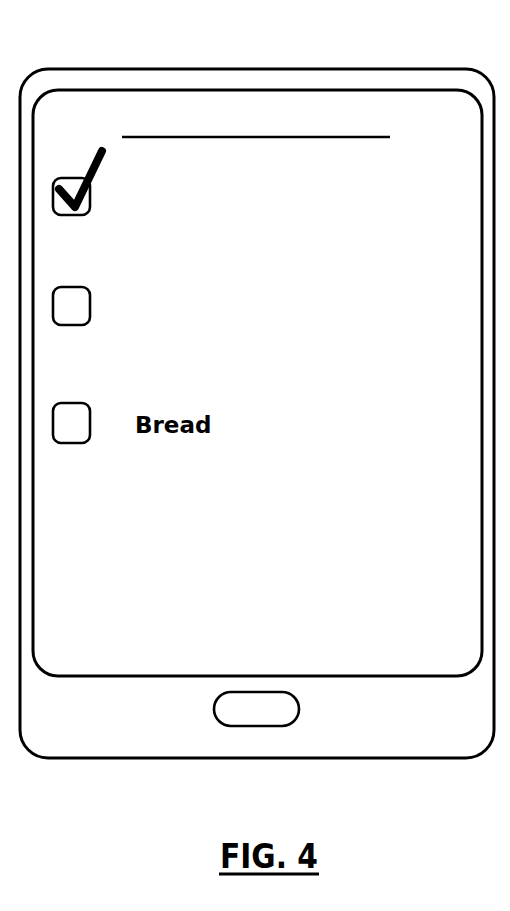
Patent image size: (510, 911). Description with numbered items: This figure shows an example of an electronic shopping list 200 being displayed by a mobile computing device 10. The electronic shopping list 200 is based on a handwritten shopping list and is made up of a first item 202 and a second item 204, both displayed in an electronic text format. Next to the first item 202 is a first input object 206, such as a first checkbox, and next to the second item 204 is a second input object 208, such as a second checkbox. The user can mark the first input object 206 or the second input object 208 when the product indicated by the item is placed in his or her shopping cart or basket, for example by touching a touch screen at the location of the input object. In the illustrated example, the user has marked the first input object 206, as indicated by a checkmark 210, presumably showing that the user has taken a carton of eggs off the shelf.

The mobile computing device 10 is at (62, 69).
The electronic shopping list 200 is at (386, 178).
The first item 202 is at (305, 182).
The second item 204 is at (316, 286).
The first input object 206 is at (75, 215).
The second input object 208 is at (72, 287).
The checkmark 210 is at (101, 146).